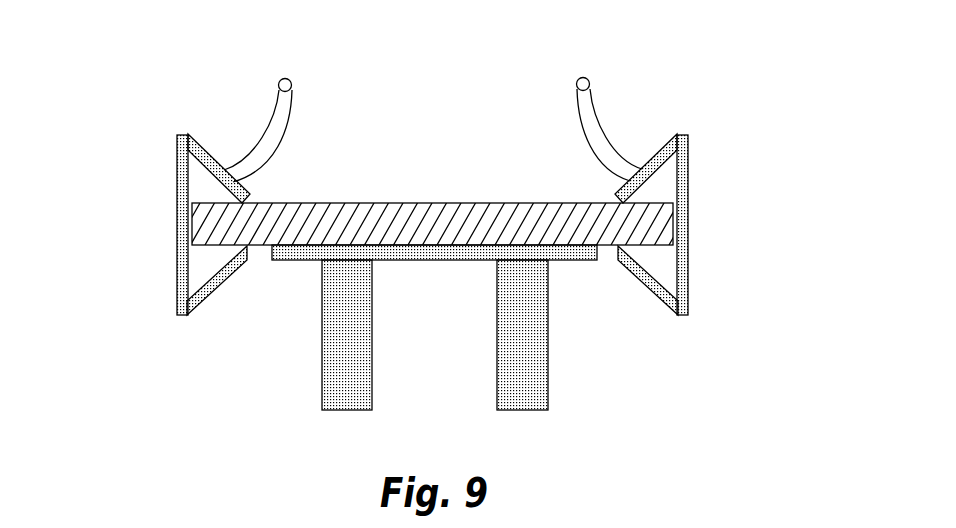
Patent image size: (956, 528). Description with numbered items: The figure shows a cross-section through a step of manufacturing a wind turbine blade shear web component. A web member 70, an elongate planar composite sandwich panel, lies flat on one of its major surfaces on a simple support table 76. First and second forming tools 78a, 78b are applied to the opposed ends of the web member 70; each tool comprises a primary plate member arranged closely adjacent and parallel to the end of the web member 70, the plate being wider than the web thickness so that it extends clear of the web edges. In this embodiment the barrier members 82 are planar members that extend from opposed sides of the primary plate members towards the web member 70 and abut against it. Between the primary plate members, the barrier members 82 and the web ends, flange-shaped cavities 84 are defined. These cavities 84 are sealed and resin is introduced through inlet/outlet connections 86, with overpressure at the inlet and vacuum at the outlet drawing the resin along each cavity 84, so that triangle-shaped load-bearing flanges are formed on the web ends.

The web member 70 is at (413, 203).
The support table 76 is at (400, 260).
The first forming tool 78a is at (165, 340).
The second forming tool 78b is at (700, 330).
The barrier members 82 is at (216, 153).
The flange-shaped cavities 84 is at (198, 257).
The inlet/outlet connections 86 is at (583, 125).